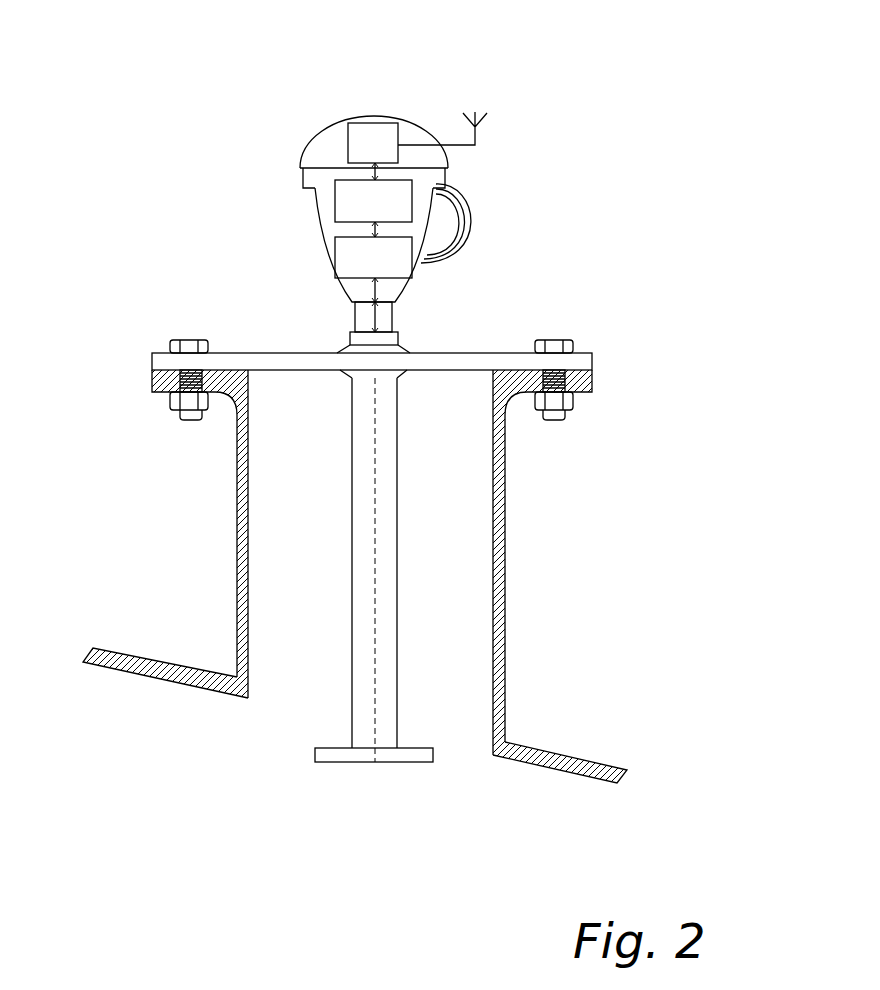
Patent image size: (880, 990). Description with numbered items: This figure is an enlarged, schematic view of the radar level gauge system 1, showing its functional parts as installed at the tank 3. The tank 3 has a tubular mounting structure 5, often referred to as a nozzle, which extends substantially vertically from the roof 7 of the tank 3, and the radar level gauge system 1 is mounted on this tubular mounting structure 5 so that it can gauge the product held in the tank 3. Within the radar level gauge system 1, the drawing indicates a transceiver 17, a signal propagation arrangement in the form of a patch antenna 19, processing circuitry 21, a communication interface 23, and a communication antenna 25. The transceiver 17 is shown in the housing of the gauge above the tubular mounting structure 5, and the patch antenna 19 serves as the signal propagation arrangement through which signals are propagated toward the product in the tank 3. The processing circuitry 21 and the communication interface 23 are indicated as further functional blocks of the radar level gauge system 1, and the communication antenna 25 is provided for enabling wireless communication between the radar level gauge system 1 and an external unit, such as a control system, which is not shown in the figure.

The radar level gauge system 1 is at (472, 83).
The tank 3 is at (622, 624).
The tubular mounting structure 5 is at (546, 505).
The roof 7 is at (125, 655).
The transceiver 17 is at (412, 267).
The patch antenna 19 is at (412, 762).
The processing circuitry 21 is at (315, 193).
The communication interface 23 is at (367, 118).
The communication antenna 25 is at (477, 135).